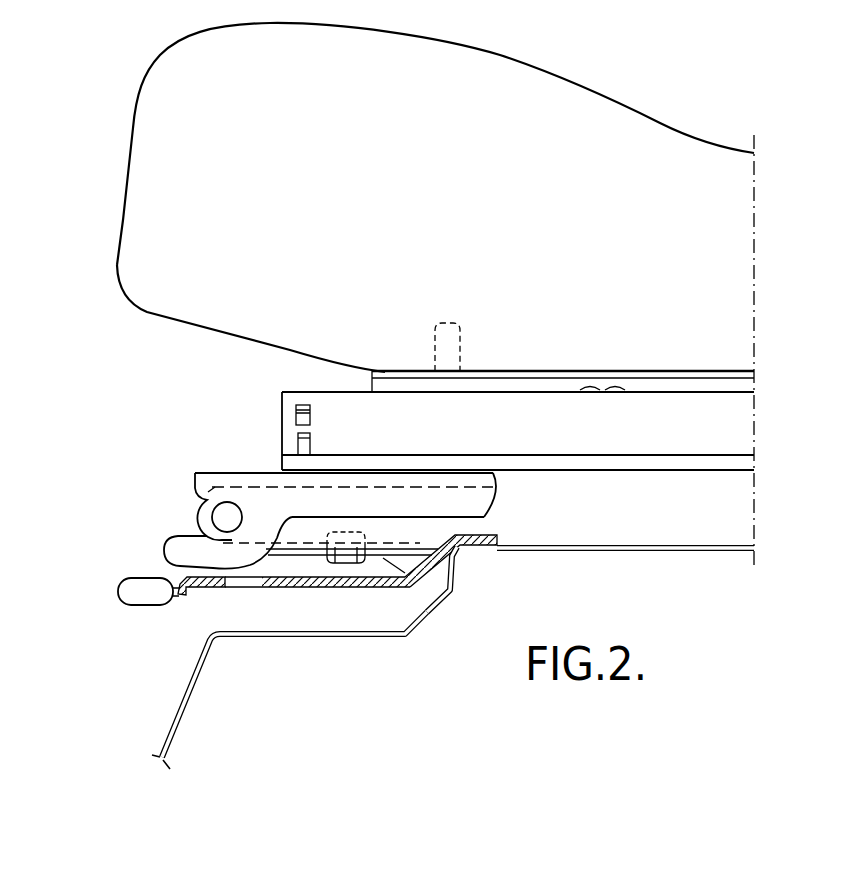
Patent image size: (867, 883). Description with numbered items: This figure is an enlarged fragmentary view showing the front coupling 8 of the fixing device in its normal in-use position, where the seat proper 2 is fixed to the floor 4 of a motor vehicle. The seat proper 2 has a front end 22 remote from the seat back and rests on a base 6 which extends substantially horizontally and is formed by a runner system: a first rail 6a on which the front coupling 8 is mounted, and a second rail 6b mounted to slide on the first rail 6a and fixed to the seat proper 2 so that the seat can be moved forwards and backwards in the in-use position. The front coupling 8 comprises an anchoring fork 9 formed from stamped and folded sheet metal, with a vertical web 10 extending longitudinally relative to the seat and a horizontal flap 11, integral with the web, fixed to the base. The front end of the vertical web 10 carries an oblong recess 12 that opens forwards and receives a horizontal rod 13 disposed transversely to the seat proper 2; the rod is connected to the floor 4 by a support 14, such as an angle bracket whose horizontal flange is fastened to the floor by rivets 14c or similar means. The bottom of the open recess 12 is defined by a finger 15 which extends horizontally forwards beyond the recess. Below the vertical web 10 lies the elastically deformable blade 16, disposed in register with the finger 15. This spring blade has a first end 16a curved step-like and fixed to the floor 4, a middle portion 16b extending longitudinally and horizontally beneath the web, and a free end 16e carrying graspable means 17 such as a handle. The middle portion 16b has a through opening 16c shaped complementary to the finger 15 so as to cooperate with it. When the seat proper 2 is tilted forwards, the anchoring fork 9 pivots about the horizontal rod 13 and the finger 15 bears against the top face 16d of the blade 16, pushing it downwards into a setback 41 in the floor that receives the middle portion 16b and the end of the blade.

The seat proper 2 is at (130, 128).
The front end 22 is at (152, 222).
The base 6 is at (278, 385).
The first rail 6a is at (647, 433).
The second rail 6b is at (692, 385).
The front coupling 8 is at (112, 475).
The anchoring fork 9 is at (495, 505).
The vertical web 10 is at (205, 487).
The horizontal flap 11 is at (495, 473).
The oblong recess 12 is at (190, 494).
The horizontal rod 13 is at (220, 517).
The support 14 is at (458, 562).
The rivets 14c is at (432, 588).
The finger 15 is at (170, 547).
The elastically deformable blade 16 is at (212, 617).
The first end 16a is at (507, 553).
The middle portion 16b is at (290, 585).
The through opening 16c is at (247, 584).
The top face 16d is at (384, 574).
The free end 16e is at (184, 601).
The graspable means 17 is at (127, 593).
The floor 4 is at (612, 553).
The setback 41 is at (357, 620).